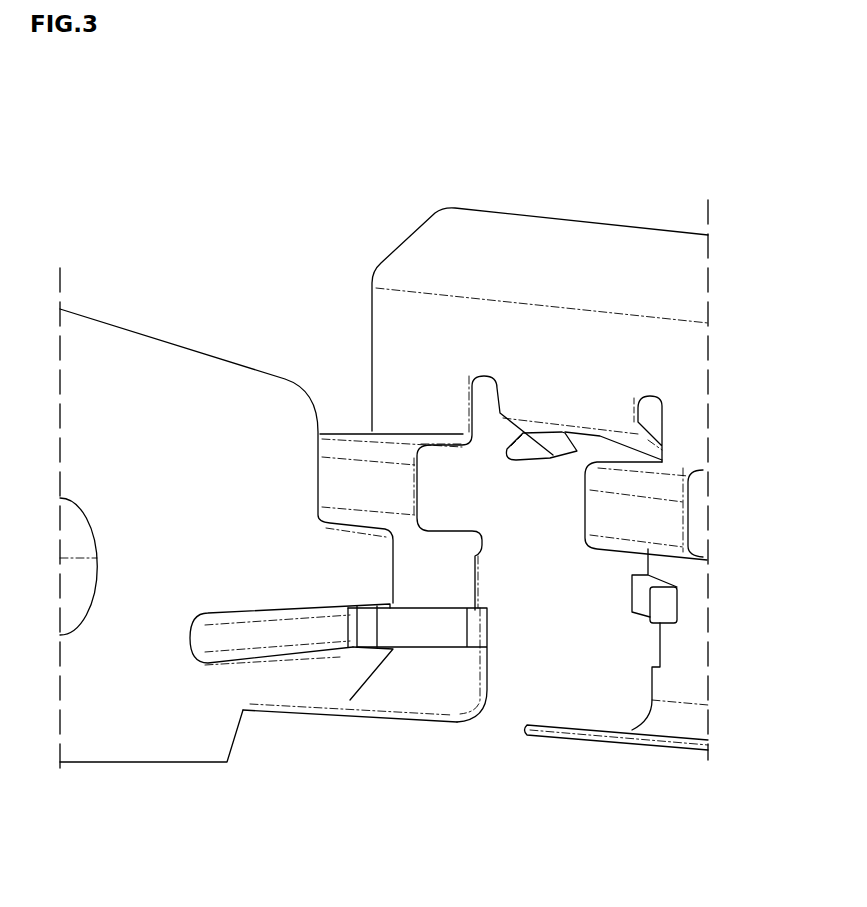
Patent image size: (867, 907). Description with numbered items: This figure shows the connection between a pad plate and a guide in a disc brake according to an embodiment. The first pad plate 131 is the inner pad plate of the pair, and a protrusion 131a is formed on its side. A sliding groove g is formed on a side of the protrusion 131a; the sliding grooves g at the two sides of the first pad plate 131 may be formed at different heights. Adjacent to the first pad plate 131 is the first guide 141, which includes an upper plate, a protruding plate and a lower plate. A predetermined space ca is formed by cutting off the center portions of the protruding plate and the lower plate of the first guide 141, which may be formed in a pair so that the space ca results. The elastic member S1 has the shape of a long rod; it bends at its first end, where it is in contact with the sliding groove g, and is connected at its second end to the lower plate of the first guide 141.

The first pad plate 131 is at (147, 365).
The first guide 141 is at (490, 243).
The protrusion 131a is at (322, 683).
The sliding groove g is at (240, 633).
The elastic member S1 is at (430, 632).
The predetermined space ca is at (545, 635).